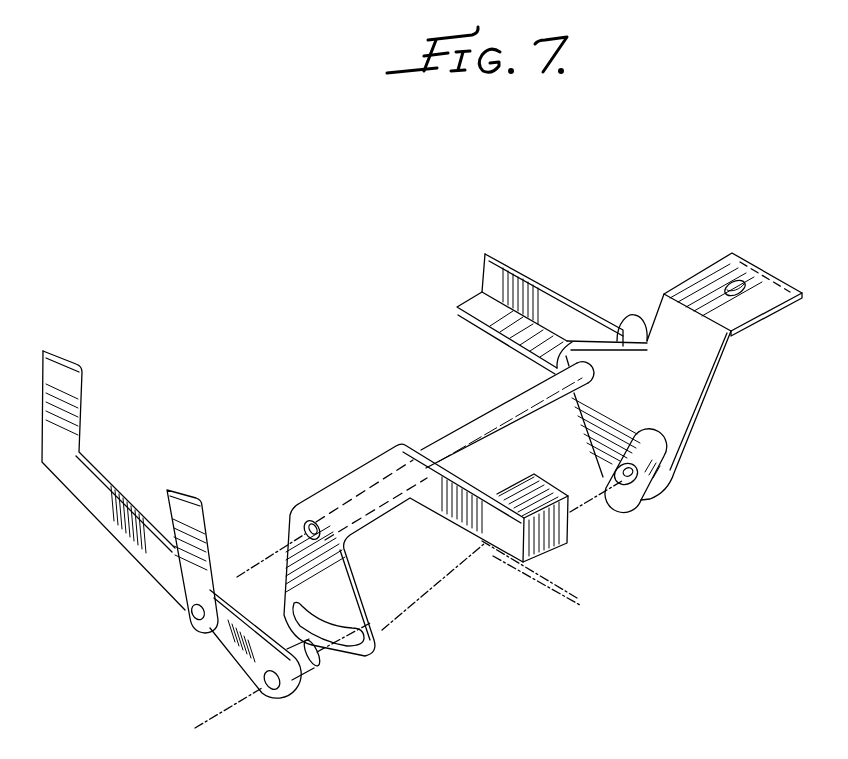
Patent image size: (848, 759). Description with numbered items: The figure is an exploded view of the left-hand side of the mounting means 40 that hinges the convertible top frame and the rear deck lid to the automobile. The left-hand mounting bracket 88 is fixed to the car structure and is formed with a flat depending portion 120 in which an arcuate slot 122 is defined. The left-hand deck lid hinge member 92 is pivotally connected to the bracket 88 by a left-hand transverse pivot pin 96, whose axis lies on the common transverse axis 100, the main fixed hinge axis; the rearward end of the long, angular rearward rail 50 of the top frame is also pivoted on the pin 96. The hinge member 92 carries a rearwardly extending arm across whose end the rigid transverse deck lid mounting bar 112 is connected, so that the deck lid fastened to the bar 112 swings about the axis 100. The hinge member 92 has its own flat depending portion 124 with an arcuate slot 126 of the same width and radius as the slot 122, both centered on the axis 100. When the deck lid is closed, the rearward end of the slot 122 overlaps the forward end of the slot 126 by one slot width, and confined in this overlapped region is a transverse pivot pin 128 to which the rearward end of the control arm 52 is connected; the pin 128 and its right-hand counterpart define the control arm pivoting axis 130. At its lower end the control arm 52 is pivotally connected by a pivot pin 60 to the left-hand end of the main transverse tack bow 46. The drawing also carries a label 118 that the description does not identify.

The mounting means 40 is at (357, 390).
The main transverse tack bow 46 is at (204, 512).
The rearward rail 50 is at (522, 272).
The control arm 52 is at (70, 392).
The pivot pin 60 is at (191, 618).
The left-hand mounting bracket 88 is at (684, 279).
The left-hand deck lid hinge member 92 is at (355, 565).
The left-hand transverse pivot pin 96 is at (480, 417).
The transverse axis 100 is at (273, 545).
The deck lid mounting bar 112 is at (552, 536).
The axis 118 is at (583, 487).
The flat depending portion 120 is at (700, 380).
The arcuate slot 122 is at (645, 492).
The flat depending portion 124 is at (357, 583).
The arcuate slot 126 is at (354, 652).
The transverse pivot pin 128 is at (278, 698).
The control arm pivoting axis 130 is at (233, 703).